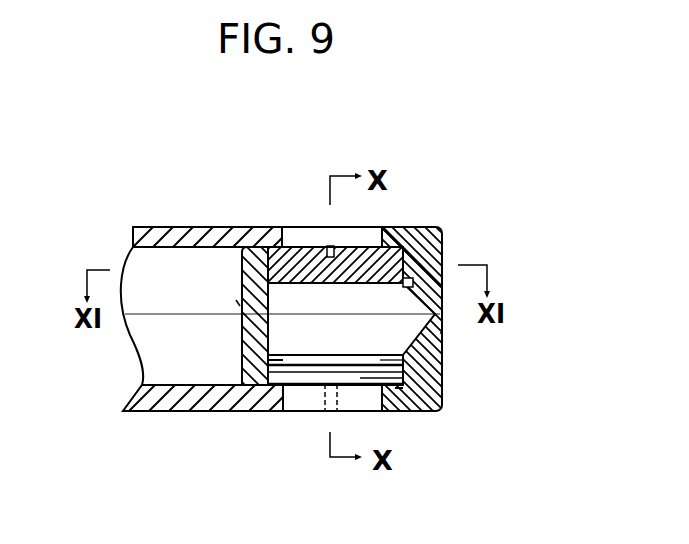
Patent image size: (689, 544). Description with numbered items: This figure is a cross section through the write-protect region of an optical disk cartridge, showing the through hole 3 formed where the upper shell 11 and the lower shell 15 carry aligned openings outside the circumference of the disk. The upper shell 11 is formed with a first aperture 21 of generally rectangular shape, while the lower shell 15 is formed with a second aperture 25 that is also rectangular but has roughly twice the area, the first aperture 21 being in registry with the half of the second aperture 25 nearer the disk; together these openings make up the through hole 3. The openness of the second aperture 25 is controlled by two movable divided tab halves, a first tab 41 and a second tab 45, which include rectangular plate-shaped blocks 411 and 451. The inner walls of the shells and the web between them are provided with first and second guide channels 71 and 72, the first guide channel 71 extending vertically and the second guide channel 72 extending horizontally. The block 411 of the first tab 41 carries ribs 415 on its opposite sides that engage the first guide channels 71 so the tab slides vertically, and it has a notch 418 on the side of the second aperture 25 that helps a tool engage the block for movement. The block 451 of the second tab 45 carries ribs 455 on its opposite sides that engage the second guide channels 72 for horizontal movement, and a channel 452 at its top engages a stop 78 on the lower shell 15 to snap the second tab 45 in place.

The through hole 3 is at (372, 330).
The upper shell 11 is at (160, 411).
The lower shell 15 is at (176, 227).
The first aperture 21 is at (307, 405).
The second aperture 25 is at (368, 232).
The first tab 41 is at (398, 245).
The second tab 45 is at (360, 388).
The first guide channel 71 is at (440, 262).
The second guide channel 72 is at (238, 300).
The stop 78 is at (405, 388).
The tab block 411 is at (440, 247).
The rib 415 is at (263, 228).
The notch 418 is at (330, 246).
The tab block 451 is at (372, 388).
The channel 452 is at (407, 360).
The rib 455 is at (243, 375).